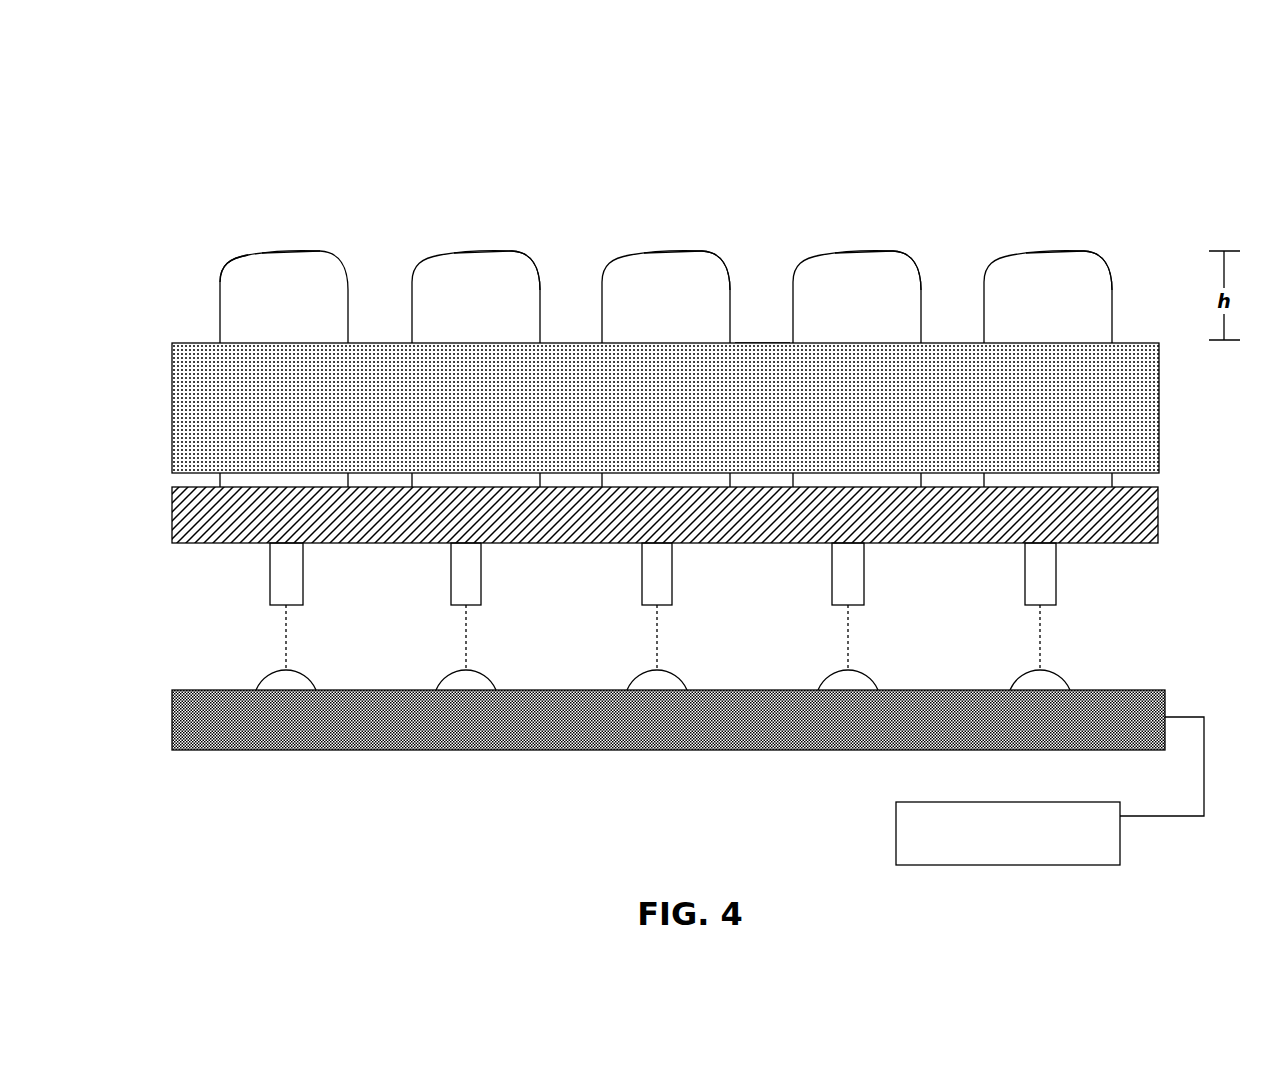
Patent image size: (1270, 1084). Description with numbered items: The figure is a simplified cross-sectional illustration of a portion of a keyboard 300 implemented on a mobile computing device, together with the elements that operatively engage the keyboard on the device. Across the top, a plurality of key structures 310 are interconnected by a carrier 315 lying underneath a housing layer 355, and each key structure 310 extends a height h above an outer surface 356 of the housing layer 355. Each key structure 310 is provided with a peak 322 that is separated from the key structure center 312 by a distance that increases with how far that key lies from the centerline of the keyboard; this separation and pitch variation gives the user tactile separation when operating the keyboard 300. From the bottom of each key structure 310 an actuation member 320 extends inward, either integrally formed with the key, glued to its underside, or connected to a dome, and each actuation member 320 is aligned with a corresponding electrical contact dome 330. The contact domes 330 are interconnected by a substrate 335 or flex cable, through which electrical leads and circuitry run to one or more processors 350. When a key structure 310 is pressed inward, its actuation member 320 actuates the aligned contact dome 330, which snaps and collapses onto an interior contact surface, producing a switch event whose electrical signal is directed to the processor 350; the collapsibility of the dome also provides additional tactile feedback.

The keyboard 300 is at (228, 110).
The key structure 310 is at (293, 248).
The key structure center 312 is at (285, 250).
The peak 322 is at (278, 252).
The outer surface 356 is at (762, 343).
The housing layer 355 is at (665, 408).
The substrate 315 is at (665, 515).
The actuation member 320 is at (285, 573).
The electrical contact dome 330 is at (273, 670).
The substrate 335 is at (668, 720).
The processor 350 is at (1050, 791).